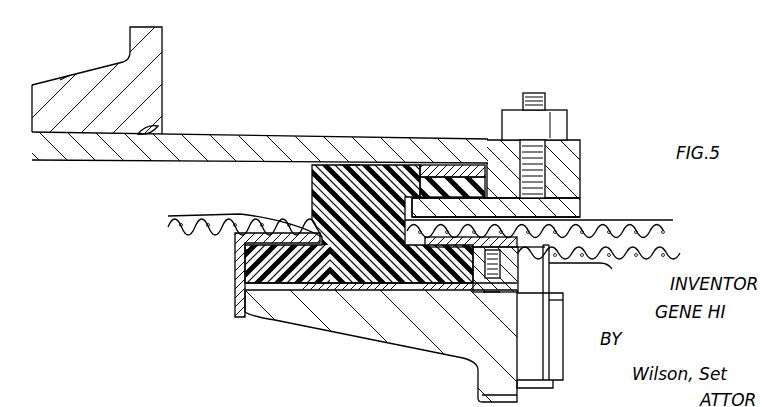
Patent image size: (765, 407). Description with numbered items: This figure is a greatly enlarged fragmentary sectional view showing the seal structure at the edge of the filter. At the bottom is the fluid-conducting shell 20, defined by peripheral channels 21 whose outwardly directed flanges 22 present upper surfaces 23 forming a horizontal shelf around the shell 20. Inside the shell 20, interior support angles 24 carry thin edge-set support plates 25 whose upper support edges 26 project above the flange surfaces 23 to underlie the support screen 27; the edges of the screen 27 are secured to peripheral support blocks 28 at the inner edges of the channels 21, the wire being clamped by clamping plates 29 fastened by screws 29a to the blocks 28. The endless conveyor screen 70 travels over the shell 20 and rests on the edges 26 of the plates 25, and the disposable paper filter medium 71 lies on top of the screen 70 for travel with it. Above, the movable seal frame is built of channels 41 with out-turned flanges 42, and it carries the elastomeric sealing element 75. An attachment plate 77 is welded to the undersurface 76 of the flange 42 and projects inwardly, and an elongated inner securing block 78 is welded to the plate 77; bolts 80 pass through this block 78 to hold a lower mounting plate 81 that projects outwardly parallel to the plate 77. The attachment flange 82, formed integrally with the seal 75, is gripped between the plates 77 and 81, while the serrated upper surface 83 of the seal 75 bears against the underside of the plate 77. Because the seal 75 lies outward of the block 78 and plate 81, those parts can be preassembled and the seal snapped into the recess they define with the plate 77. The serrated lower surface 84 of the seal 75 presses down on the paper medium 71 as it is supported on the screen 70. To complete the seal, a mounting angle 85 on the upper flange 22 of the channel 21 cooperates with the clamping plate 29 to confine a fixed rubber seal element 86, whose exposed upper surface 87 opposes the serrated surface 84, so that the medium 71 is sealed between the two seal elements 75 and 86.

The bottom fluid-conducting shell 20 is at (570, 375).
The peripheral channel 21 is at (478, 392).
The flange 22 is at (413, 345).
The upper surface 23 is at (378, 290).
The interior support angle 24 is at (548, 390).
The edge-set support plate 25 is at (550, 278).
The upper support edge 26 is at (586, 274).
The support screen 27 is at (682, 252).
The peripheral support block 28 is at (563, 300).
The clamping plate 29 is at (483, 265).
The screw 29a is at (485, 296).
The seal frame channel 41 is at (164, 52).
The out-turned flange 42 is at (74, 75).
The endless screen 70 is at (676, 235).
The disposable filter medium 71 is at (633, 220).
The sealing element 75 is at (304, 196).
The undersurface 76 is at (158, 126).
The attachment plate 77 is at (262, 138).
The inner securing block 78 is at (582, 158).
The bolt 80 is at (546, 100).
The lower mounting plate 81 is at (580, 210).
The attachment flange 82 is at (452, 177).
The serrated upper surface 83 is at (345, 165).
The serrated lower surface 84 is at (335, 290).
The mounting angle 85 is at (236, 303).
The fixed seal element 86 is at (250, 268).
The exposed upper surface 87 is at (405, 283).